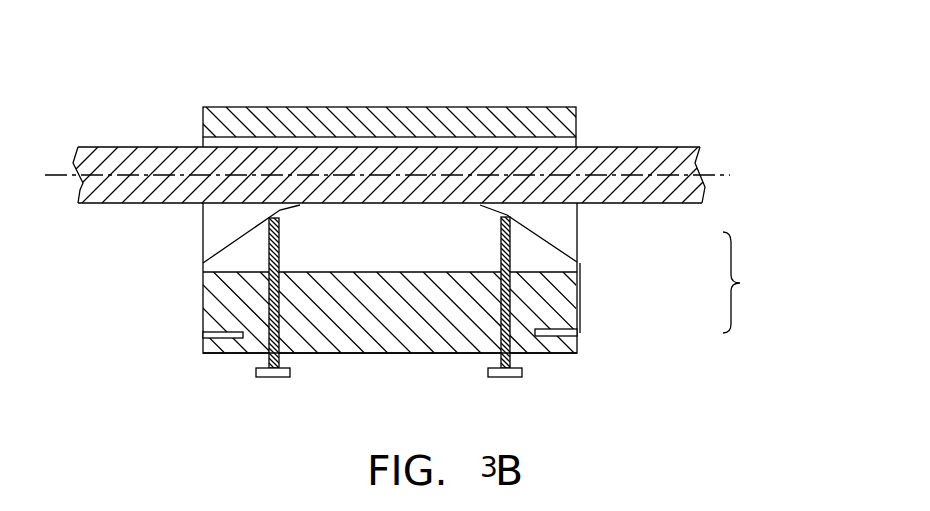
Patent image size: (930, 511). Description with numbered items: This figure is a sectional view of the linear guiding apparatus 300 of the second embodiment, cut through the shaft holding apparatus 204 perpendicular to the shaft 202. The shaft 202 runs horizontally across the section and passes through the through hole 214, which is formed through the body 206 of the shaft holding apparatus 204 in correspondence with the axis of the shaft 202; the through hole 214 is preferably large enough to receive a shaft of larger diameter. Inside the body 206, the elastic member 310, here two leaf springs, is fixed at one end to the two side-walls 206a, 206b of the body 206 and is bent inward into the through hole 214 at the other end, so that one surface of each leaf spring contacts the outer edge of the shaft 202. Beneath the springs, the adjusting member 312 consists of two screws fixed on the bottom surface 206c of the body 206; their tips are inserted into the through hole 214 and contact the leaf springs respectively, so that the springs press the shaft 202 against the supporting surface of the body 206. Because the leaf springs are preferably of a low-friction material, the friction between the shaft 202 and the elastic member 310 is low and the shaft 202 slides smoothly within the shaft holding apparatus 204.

The optical pickup head assembly 300 is at (758, 27).
The shaft 202 is at (625, 147).
The shaft holding apparatus 204 is at (755, 282).
The body 206 is at (577, 222).
The elastic member 310 is at (580, 272).
The adjusting member 312 is at (522, 374).
The through hole 214 is at (223, 235).
The side-wall 206a is at (203, 345).
The side-wall 206b is at (577, 343).
The bottom surface 206c is at (390, 353).